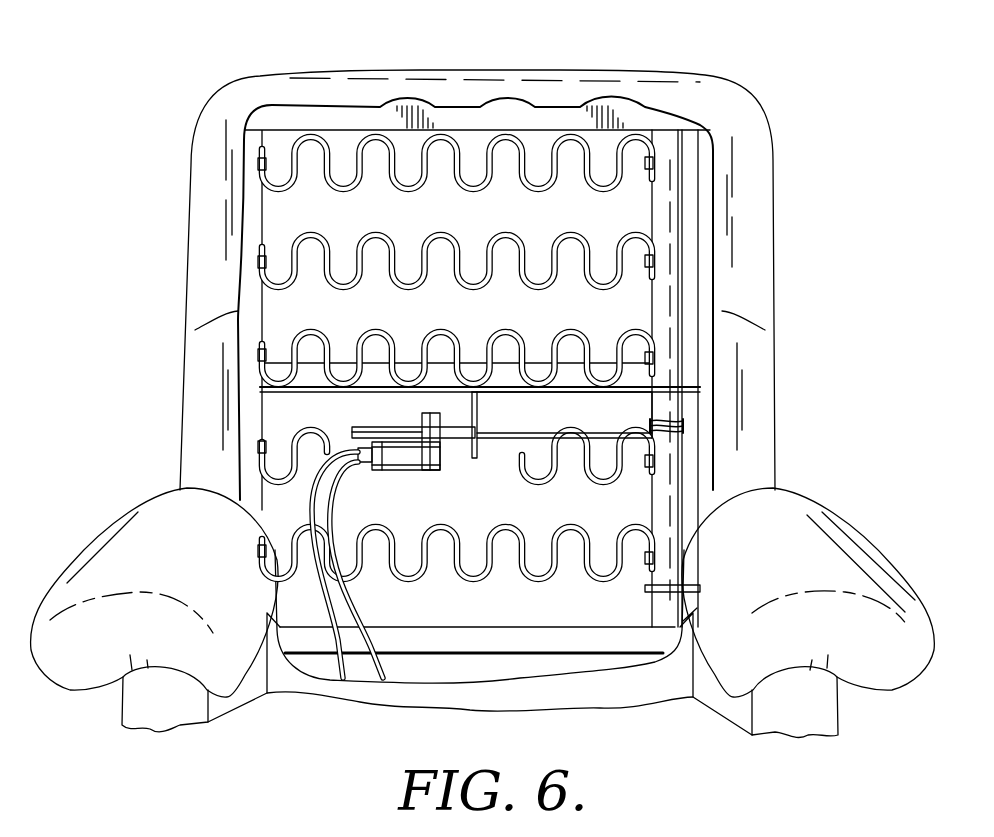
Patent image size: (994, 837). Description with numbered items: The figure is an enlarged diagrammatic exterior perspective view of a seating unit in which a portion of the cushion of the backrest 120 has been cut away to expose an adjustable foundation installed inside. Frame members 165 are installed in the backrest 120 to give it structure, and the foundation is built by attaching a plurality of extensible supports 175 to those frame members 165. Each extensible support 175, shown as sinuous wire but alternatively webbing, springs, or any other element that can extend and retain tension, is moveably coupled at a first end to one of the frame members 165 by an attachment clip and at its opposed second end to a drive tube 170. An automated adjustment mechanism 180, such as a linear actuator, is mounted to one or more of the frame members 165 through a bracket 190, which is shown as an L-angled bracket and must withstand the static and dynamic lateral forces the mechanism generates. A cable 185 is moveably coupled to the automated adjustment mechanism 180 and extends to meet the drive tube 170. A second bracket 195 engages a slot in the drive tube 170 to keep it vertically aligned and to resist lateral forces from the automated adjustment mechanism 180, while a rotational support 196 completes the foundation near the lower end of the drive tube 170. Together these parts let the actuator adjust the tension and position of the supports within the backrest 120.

The backrest 120 is at (193, 348).
The frame members 165 is at (522, 118).
The drive tube 170 is at (659, 208).
The extensible supports 175 is at (527, 189).
The automated adjustment mechanism 180 is at (370, 478).
The cable 185 is at (548, 430).
The bracket 190 is at (478, 452).
The bracket 195 is at (650, 424).
The rotational support 196 is at (645, 590).